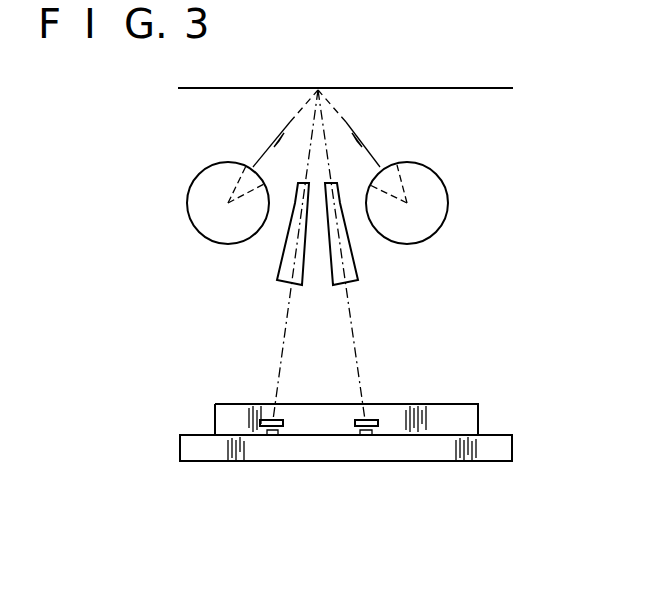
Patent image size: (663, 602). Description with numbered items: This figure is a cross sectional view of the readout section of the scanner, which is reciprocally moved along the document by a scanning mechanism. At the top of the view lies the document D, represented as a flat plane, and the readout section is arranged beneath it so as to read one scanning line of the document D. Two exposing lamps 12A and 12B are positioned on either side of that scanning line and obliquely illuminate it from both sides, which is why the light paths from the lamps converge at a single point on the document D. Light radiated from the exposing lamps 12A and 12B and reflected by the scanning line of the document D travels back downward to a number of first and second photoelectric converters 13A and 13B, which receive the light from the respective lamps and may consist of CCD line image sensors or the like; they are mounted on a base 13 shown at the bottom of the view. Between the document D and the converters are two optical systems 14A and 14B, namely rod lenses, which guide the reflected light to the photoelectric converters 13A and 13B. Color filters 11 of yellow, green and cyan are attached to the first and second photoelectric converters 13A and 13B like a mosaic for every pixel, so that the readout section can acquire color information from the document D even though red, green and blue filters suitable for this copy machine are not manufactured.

The document D is at (479, 88).
The color filters 11 is at (275, 419).
The exposing lamp 12A is at (428, 176).
The exposing lamp 12B is at (206, 172).
The substrate 13 is at (383, 451).
The first photoelectric converters 13A is at (269, 436).
The second photoelectric converters 13B is at (365, 436).
The optical system (rod lens) 14A is at (282, 268).
The optical system (rod lens) 14B is at (353, 268).